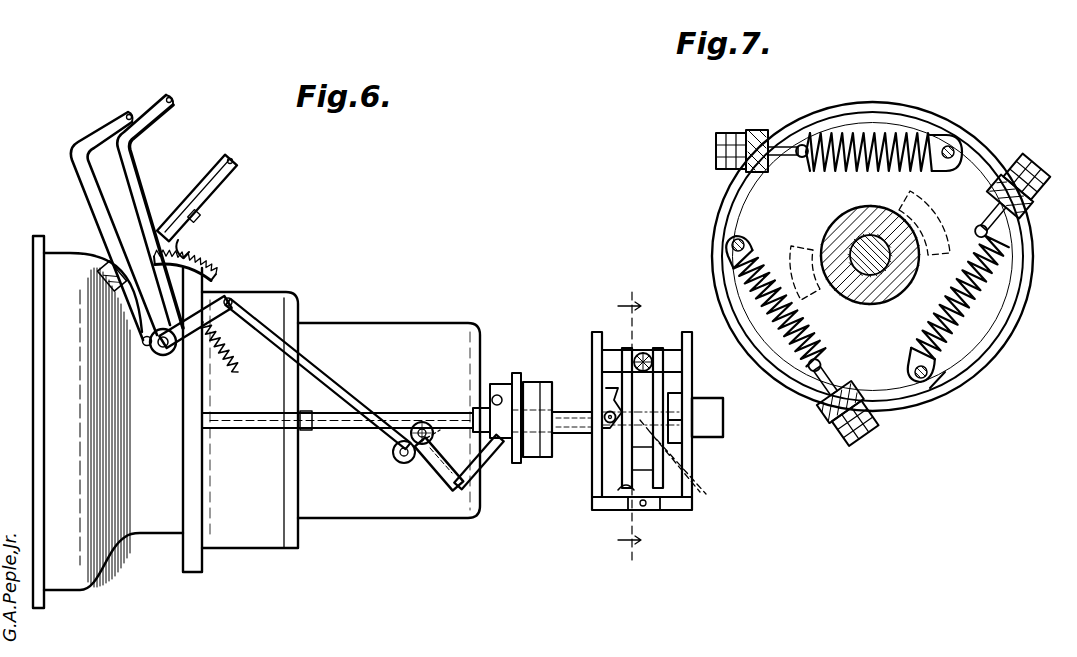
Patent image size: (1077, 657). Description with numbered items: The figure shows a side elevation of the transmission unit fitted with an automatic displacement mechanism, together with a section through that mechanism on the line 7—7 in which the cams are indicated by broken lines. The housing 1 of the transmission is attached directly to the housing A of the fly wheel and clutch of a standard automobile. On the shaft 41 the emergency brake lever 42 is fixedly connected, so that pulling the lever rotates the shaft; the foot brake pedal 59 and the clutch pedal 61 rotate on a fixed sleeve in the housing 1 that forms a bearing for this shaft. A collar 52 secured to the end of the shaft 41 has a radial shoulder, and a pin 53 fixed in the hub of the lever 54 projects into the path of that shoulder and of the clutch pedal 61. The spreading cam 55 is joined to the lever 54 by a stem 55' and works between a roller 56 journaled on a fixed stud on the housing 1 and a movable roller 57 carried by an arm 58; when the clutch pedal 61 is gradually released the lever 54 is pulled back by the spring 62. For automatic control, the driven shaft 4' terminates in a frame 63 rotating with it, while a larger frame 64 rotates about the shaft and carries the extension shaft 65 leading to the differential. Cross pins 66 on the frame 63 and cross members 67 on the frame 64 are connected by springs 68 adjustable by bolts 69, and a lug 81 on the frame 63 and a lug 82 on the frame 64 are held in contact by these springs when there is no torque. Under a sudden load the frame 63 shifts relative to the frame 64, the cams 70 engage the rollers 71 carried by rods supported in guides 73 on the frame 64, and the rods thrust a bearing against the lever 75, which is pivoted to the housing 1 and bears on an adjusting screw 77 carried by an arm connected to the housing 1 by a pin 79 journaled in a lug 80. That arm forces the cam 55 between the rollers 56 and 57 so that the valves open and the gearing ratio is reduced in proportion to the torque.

In FIG. 6, the housing 1 is at (388, 338).
In FIG. 6, the shaft 41 is at (210, 301).
In FIG. 6, the emergency brake lever 42 is at (216, 172).
In FIG. 6, the collar 52 is at (146, 338).
In FIG. 6, the pin 53 is at (147, 347).
In FIG. 6, the lever 54 is at (232, 297).
In FIG. 6, the spreading cam 55 is at (453, 468).
In FIG. 6, the stem 55' is at (337, 392).
In FIG. 6, the roller 56 is at (420, 422).
In FIG. 6, the movable roller 57 is at (392, 452).
In FIG. 6, the arm 58 is at (410, 460).
In FIG. 6, the foot brake pedal 59 is at (128, 189).
In FIG. 6, the clutch pedal 61 is at (95, 192).
In FIG. 6, the spring 62 is at (238, 366).
In FIG. 6, the frame 63 is at (660, 348).
In FIG. 7, the frame 63 is at (998, 346).
In FIG. 6, the frame 64 is at (598, 336).
In FIG. 6, the extension shaft 65 is at (710, 425).
In FIG. 6, the cross pins 66 is at (618, 490).
In FIG. 7, the cross pins 66 is at (932, 371).
In FIG. 6, the cross members 67 is at (660, 505).
In FIG. 7, the springs 68 is at (870, 140).
In FIG. 7, the bolts 69 is at (790, 142).
In FIG. 6, the cams 70 is at (612, 392).
In FIG. 7, the cams 70 is at (812, 255).
In FIG. 6, the rollers 71 is at (604, 414).
In FIG. 6, the bearings or guides 73 is at (568, 440).
In FIG. 6, the lever 75 is at (516, 400).
In FIG. 6, the adjusting screw 77 is at (480, 412).
In FIG. 6, the pin 79 is at (498, 394).
In FIG. 6, the lug 80 is at (497, 398).
In FIG. 6, the lug 81 is at (676, 437).
In FIG. 6, the lug 82 is at (676, 406).
In FIG. 6, the driven shaft 4' is at (680, 462).
In FIG. 7, the driven shaft 4' is at (870, 269).
In FIG. 6, the section line 7— 7 is at (632, 426).
In FIG. 6, the housing of the fly wheel and clutch A is at (150, 527).